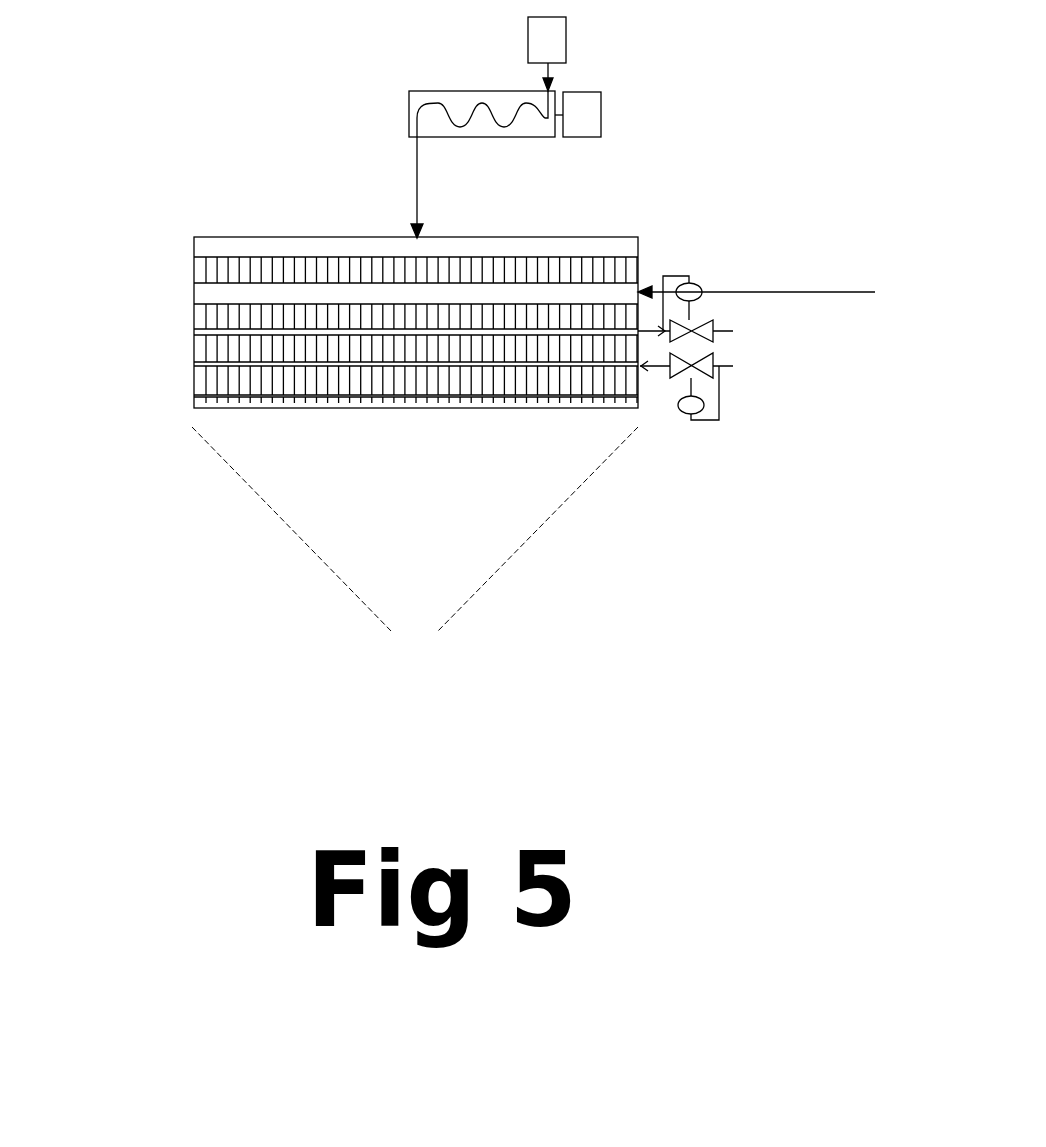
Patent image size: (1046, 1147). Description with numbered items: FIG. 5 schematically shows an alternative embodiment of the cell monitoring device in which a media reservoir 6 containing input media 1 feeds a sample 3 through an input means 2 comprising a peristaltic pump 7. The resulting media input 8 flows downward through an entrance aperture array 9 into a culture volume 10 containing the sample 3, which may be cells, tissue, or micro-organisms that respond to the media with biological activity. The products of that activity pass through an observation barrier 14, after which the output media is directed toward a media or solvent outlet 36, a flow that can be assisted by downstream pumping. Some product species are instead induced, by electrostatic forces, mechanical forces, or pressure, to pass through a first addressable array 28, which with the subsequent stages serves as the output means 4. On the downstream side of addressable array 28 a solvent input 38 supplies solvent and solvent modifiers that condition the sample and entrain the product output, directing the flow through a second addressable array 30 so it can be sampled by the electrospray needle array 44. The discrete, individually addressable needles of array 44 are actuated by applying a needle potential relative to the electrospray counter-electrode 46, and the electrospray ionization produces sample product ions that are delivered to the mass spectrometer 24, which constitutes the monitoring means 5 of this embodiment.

The input media 1 is at (852, 10).
The input means 2 is at (852, 270).
The sample 3 is at (771, 303).
The output means 4 is at (848, 313).
The monitoring means 5 is at (848, 678).
The media reservoir 6 is at (604, 54).
The peristaltic pump 7 is at (559, 114).
The media input 8 is at (459, 178).
The entrance aperture array 9 is at (192, 265).
The culture volume 10 is at (192, 292).
The observation barrier 14 is at (322, 314).
The mass spectrometer 24 is at (415, 566).
The addressable array 28 is at (324, 356).
The addressable array 30 is at (324, 390).
The media or solvent outlet 36 is at (733, 332).
The solvent input 38 is at (730, 386).
The electrospray needle array 44 is at (416, 362).
The electrospray counter-electrode 46 is at (344, 427).